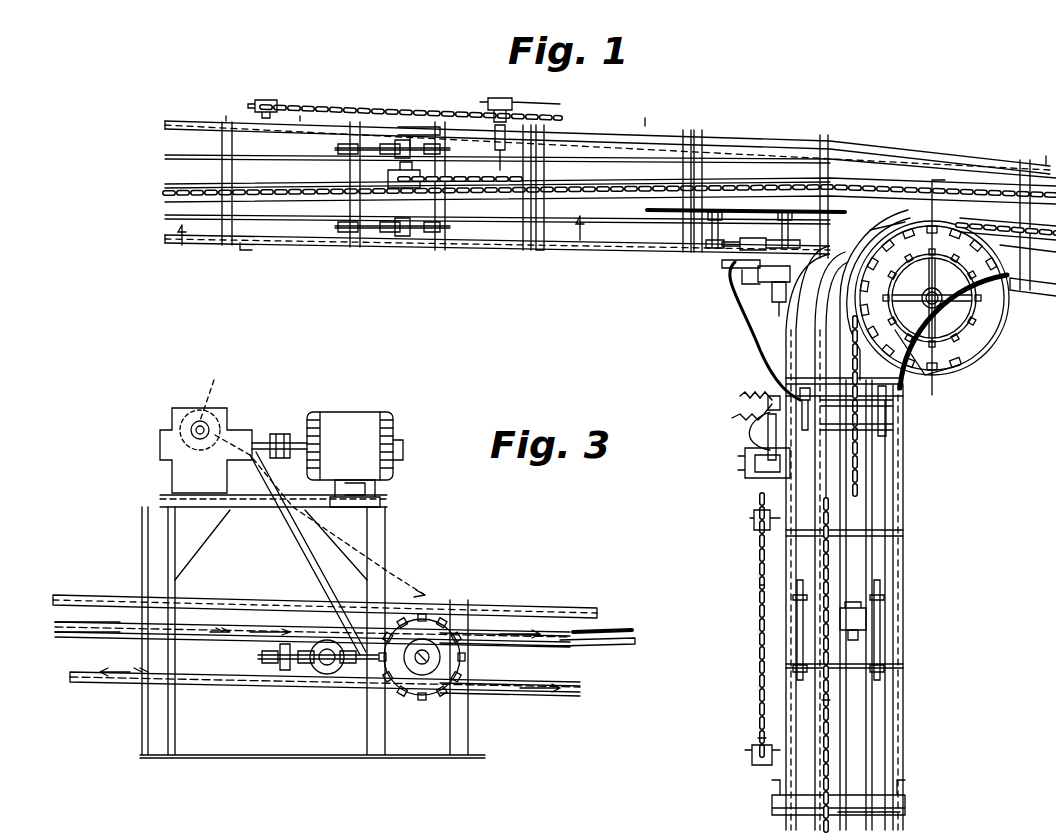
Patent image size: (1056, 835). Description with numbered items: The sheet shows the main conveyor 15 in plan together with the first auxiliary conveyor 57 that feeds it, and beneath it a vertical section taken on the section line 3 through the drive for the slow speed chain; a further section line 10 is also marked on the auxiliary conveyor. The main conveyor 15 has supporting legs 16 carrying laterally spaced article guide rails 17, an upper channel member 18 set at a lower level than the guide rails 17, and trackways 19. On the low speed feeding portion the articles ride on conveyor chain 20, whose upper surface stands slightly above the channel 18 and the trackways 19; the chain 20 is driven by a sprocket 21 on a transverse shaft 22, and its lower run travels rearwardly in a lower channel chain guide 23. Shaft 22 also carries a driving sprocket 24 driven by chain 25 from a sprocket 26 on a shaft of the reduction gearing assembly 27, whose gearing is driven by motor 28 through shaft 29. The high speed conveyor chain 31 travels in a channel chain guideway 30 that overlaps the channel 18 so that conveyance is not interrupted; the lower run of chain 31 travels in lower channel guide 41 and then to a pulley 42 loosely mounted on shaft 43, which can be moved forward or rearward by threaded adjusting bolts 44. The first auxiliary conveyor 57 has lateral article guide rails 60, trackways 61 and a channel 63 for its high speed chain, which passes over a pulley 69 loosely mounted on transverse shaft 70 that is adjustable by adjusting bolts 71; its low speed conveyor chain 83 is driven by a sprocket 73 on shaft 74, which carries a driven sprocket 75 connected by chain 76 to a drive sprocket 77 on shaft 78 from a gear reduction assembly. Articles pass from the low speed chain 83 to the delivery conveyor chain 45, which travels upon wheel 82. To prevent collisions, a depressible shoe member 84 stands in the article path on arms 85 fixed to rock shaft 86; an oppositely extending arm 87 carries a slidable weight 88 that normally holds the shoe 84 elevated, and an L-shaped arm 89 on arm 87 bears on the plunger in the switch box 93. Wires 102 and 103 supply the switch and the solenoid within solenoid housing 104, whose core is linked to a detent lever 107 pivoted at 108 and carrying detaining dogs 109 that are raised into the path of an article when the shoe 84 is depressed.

In FIG. 1, the section line 3 is at (384, 226).
In FIG. 1, the section line 10 is at (890, 495).
In FIG. 1, the main conveyor 15 is at (858, 165).
In FIG. 3, the supporting legs 16 is at (175, 738).
In FIG. 1, the article guide rails 17 is at (212, 122).
In FIG. 3, the article guide rails 17 is at (100, 595).
In FIG. 3, the upper channel member 18 is at (200, 640).
In FIG. 1, the trackways 19 is at (278, 160).
In FIG. 3, the trackways 19 is at (55, 627).
In FIG. 3, the conveyor chain 20 is at (182, 626).
In FIG. 3, the sprocket 21 is at (444, 659).
In FIG. 1, the transverse shaft 22 is at (496, 150).
In FIG. 3, the transverse shaft 22 is at (424, 676).
In FIG. 3, the lower channel chain guide 23 is at (222, 688).
In FIG. 1, the driving sprocket 24 is at (505, 104).
In FIG. 3, the driving sprocket 24 is at (428, 622).
In FIG. 1, the chain 25 is at (392, 105).
In FIG. 3, the chain 25 is at (282, 560).
In FIG. 1, the sprocket 26 is at (270, 100).
In FIG. 3, the sprocket 26 is at (312, 475).
In FIG. 3, the reduction gearing assembly 27 is at (172, 437).
In FIG. 3, the motor 28 is at (355, 459).
In FIG. 3, the shaft 29 is at (288, 434).
In FIG. 1, the channel chain guideway 30 is at (560, 178).
In FIG. 3, the channel chain guideway 30 is at (560, 646).
In FIG. 1, the high speed conveyor chain 31 is at (640, 185).
In FIG. 3, the high speed conveyor chain 31 is at (505, 628).
In FIG. 3, the lower channel guide 41 is at (540, 696).
In FIG. 1, the pulley 42 is at (388, 182).
In FIG. 3, the pulley 42 is at (322, 677).
In FIG. 1, the shaft 43 is at (390, 130).
In FIG. 3, the shaft 43 is at (345, 664).
In FIG. 1, the threaded adjusting bolts 44 is at (335, 150).
In FIG. 3, the threaded adjusting bolts 44 is at (290, 664).
In FIG. 1, the delivery conveyor chain 45 is at (816, 326).
In FIG. 1, the first auxiliary conveyor 57 is at (908, 466).
In FIG. 1, the lateral article guide rails 60 is at (792, 330).
In FIG. 1, the trackways 61 is at (912, 488).
In FIG. 1, the channel 63 is at (840, 409).
In FIG. 1, the pulley 69 is at (860, 638).
In FIG. 1, the transverse shaft 70 is at (880, 622).
In FIG. 1, the adjusting bolts 71 is at (796, 640).
In FIG. 1, the sprocket 73 is at (834, 653).
In FIG. 1, the shaft 74 is at (752, 520).
In FIG. 1, the driven sprocket 75 is at (758, 540).
In FIG. 1, the chain 76 is at (758, 580).
In FIG. 1, the drive sprocket 77 is at (754, 764).
In FIG. 1, the shaft 78 is at (750, 750).
In FIG. 1, the wheel 82 is at (960, 350).
In FIG. 1, the low speed conveyor chain 83 is at (830, 715).
In FIG. 1, the depressible shoe member 84 is at (746, 214).
In FIG. 3, the depressible shoe member 84 is at (626, 630).
In FIG. 1, the arms 85 is at (753, 231).
In FIG. 1, the rock shaft 86 is at (716, 240).
In FIG. 1, the arm 87 is at (782, 276).
In FIG. 1, the weight 88 is at (787, 299).
In FIG. 1, the L-shaped arm 89 is at (746, 287).
In FIG. 1, the switch box 93 is at (742, 266).
In FIG. 1, the wire 102 is at (768, 392).
In FIG. 1, the wire 103 is at (766, 406).
In FIG. 1, the solenoid housing 104 is at (748, 478).
In FIG. 1, the detent lever 107 is at (765, 438).
In FIG. 1, the pivot 108 is at (886, 436).
In FIG. 1, the detaining dogs 109 is at (900, 413).